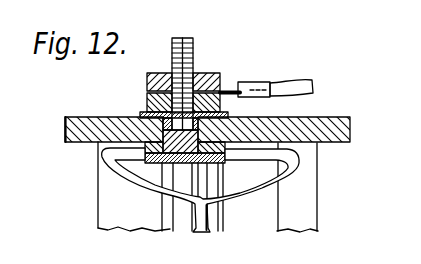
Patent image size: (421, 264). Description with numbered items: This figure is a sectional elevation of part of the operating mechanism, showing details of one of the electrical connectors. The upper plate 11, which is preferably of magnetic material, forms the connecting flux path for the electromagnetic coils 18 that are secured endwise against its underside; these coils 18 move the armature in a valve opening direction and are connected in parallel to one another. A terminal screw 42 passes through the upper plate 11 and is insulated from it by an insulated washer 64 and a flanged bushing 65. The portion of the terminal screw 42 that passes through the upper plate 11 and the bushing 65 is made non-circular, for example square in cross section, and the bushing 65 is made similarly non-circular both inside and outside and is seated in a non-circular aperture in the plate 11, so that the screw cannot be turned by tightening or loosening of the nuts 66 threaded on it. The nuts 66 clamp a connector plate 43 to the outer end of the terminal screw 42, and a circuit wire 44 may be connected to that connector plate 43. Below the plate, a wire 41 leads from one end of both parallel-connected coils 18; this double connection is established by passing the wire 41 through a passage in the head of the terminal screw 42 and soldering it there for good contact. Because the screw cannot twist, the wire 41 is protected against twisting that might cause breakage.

The upper plate 11 is at (352, 129).
The electromagnetic coils 18 is at (101, 186).
The wire 41 is at (228, 193).
The terminal screw 42 is at (194, 59).
The connector plate 43 is at (236, 88).
The circuit wire 44 is at (302, 83).
The insulated washer 64 is at (140, 113).
The flanged bushing 65 is at (229, 114).
The nut 66 is at (147, 100).